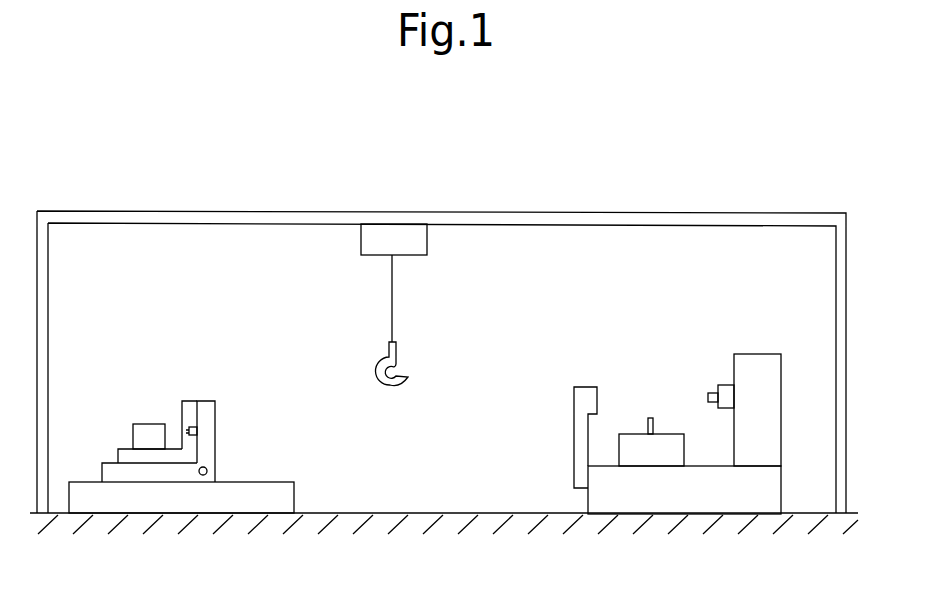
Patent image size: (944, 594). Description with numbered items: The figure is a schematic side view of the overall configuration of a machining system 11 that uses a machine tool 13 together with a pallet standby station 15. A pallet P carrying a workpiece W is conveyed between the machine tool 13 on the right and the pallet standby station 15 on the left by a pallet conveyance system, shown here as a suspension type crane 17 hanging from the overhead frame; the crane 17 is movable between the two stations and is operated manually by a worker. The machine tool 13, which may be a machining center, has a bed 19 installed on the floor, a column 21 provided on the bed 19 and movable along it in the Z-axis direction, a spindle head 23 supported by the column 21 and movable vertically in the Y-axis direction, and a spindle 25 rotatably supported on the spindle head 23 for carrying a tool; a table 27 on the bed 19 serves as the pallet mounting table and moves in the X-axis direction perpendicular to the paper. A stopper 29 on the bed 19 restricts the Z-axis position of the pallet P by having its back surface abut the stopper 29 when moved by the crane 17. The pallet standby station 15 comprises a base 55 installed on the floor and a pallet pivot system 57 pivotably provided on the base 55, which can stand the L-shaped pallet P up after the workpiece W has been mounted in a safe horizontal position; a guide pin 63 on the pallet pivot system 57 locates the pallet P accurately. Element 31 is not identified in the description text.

The machining system 11 is at (504, 143).
The machine tool 13 is at (663, 378).
The pallet standby station 15 is at (210, 400).
The suspension type crane 17 is at (427, 243).
The bed 19 is at (768, 494).
The column 21 is at (770, 411).
The spindle head 23 is at (728, 385).
The spindle 25 is at (708, 393).
The table 27 is at (686, 456).
The stopper 29 is at (573, 440).
The cutting tool 31 is at (648, 422).
The base 55 is at (293, 498).
The pallet pivot system 57 is at (208, 449).
The guide pin 63 is at (190, 427).
The workpiece W is at (148, 428).
The pallet P is at (117, 455).